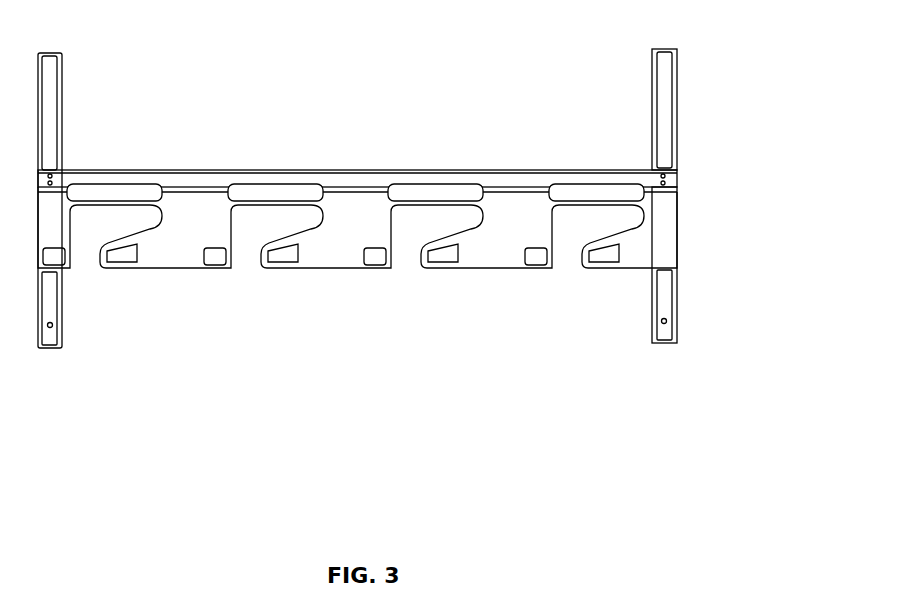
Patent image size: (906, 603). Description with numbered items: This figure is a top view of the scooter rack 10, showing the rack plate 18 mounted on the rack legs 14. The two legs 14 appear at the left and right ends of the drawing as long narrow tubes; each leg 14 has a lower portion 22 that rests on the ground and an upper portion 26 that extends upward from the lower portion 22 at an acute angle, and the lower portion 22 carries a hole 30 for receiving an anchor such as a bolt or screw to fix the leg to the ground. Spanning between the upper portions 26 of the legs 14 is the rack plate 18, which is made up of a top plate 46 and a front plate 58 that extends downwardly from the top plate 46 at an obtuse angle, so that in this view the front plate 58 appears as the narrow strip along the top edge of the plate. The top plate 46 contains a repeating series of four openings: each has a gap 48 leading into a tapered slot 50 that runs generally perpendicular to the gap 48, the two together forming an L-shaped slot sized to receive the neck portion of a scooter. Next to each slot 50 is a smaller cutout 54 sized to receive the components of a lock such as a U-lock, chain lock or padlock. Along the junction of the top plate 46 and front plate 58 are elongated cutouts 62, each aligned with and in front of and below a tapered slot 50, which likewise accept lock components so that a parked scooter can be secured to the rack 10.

The scooter rack 10 is at (413, 242).
The rack leg 14 is at (720, 238).
The rack plate 18 is at (357, 246).
The lower portion 22 is at (667, 300).
The upper portion 26 is at (673, 62).
The hole 30 is at (678, 327).
The top plate 46 is at (328, 257).
The gap 48 is at (243, 260).
The tapered slot 50 is at (267, 222).
The cutout 54 is at (272, 262).
The front plate 58 is at (182, 177).
The elongated cutout 62 is at (293, 197).